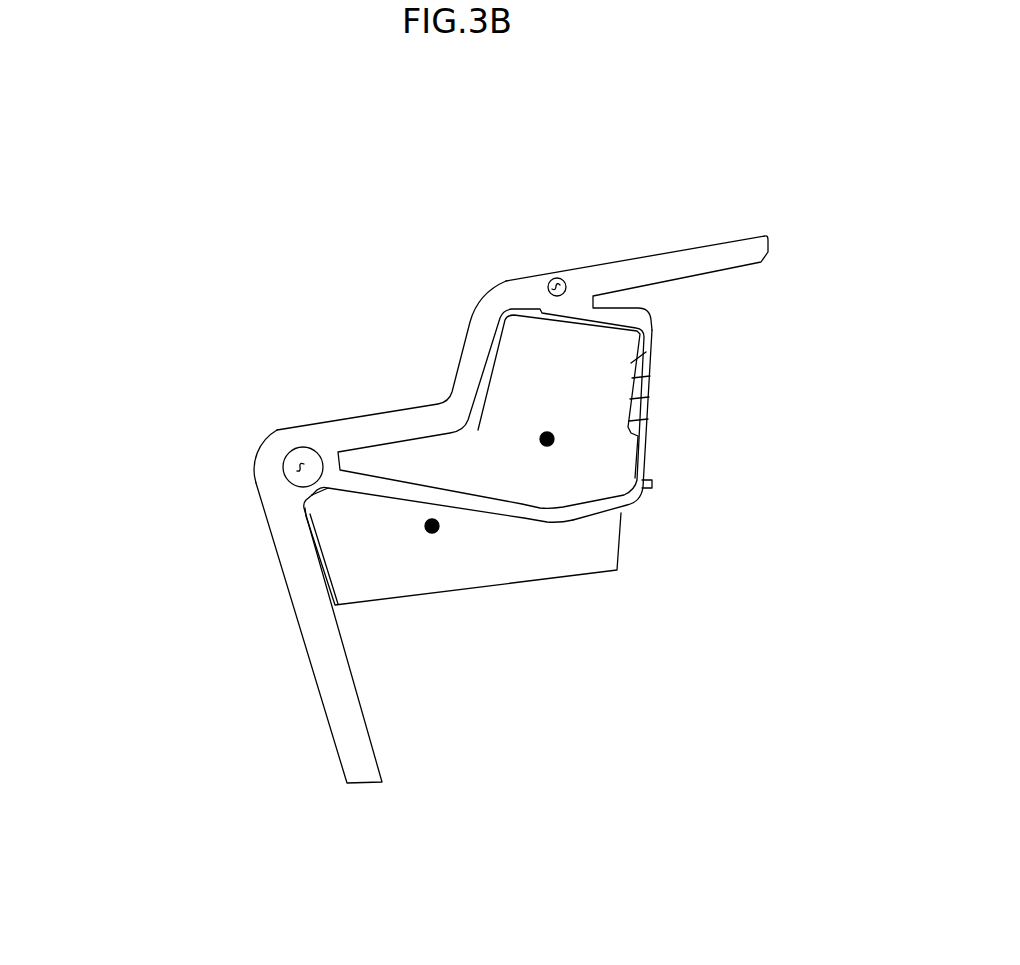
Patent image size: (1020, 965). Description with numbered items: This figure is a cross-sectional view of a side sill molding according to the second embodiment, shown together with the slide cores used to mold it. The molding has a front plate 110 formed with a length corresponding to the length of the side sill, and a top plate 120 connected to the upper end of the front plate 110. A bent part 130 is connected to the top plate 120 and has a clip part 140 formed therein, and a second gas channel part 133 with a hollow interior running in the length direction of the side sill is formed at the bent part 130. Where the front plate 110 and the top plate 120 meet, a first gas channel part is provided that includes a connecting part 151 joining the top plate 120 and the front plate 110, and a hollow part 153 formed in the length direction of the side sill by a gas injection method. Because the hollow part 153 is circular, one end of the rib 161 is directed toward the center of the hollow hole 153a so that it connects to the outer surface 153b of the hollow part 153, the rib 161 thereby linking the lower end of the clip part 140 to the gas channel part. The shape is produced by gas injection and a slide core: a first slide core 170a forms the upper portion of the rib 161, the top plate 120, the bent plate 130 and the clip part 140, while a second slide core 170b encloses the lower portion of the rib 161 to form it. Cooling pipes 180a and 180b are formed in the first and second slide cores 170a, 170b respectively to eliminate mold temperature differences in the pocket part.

The front plate 110 is at (320, 677).
The top plate 120 is at (385, 425).
The bent part 130 is at (490, 283).
The second gas channel part 133 is at (556, 278).
The clip part 140 is at (647, 420).
The connecting part 151 is at (267, 454).
The hollow part 153 is at (186, 527).
The hollow hole 153a is at (298, 470).
The outer surface 153b is at (312, 498).
The rib 161 is at (527, 512).
The first slide core 170a is at (565, 396).
The second slide core 170b is at (379, 573).
The cooling pipe 180a is at (554, 441).
The cooling pipe 180b is at (437, 532).